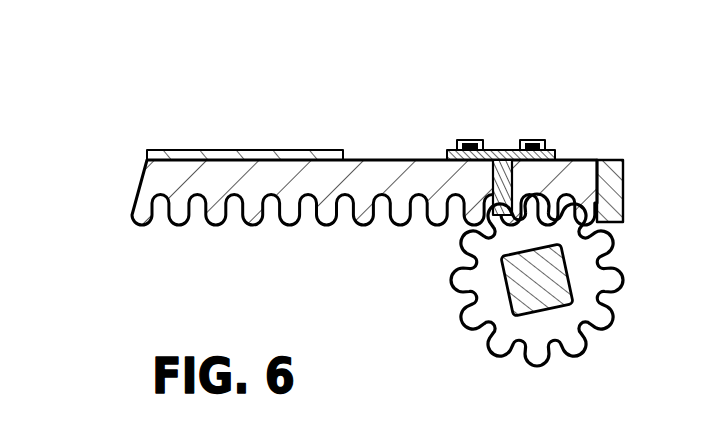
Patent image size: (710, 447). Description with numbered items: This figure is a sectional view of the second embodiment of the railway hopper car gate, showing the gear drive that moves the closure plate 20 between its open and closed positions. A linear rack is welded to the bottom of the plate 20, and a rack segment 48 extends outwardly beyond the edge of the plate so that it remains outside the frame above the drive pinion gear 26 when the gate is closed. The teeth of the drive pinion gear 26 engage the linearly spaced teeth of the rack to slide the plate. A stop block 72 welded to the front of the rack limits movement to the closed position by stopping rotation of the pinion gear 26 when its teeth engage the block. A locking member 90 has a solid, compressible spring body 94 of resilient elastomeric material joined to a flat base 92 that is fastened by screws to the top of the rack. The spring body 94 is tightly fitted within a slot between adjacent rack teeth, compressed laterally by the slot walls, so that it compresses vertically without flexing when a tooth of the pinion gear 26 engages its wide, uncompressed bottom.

The closure plate 20 is at (207, 150).
The drive pinion gear 26 is at (588, 313).
The rack segment 48 is at (379, 122).
The stop block 72 is at (607, 184).
The locking member 90 is at (498, 134).
The flat base 92 is at (548, 148).
The spring body 94 is at (494, 163).